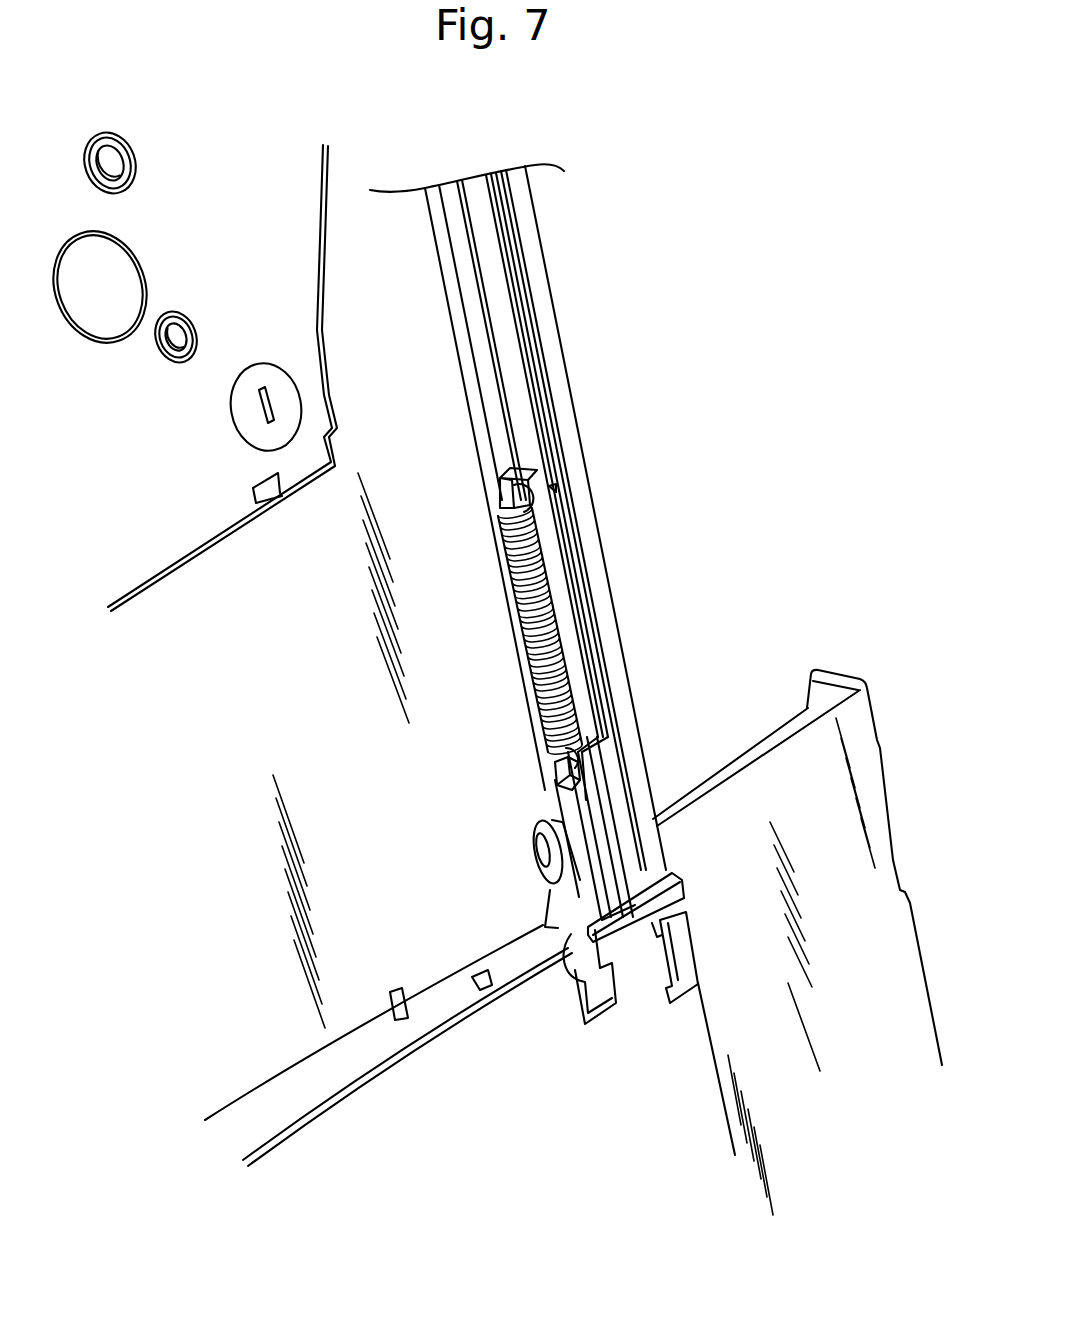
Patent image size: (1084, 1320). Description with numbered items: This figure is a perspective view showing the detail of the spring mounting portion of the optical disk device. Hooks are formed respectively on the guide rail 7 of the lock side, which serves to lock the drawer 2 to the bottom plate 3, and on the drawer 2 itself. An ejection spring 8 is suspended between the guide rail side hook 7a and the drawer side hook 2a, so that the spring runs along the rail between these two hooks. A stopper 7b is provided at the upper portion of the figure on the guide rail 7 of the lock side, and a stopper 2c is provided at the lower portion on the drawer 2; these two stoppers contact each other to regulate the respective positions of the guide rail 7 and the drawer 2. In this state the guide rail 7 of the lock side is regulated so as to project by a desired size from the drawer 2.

The drawer 2 is at (402, 299).
The drawer side hook 2a is at (555, 775).
The stopper 2c is at (597, 778).
The bottom plate 3 is at (583, 1087).
The guide rail of the lock side 7 is at (580, 432).
The guide rail side hook 7a is at (505, 495).
The stopper 7b is at (597, 718).
The ejection spring 8 is at (525, 665).